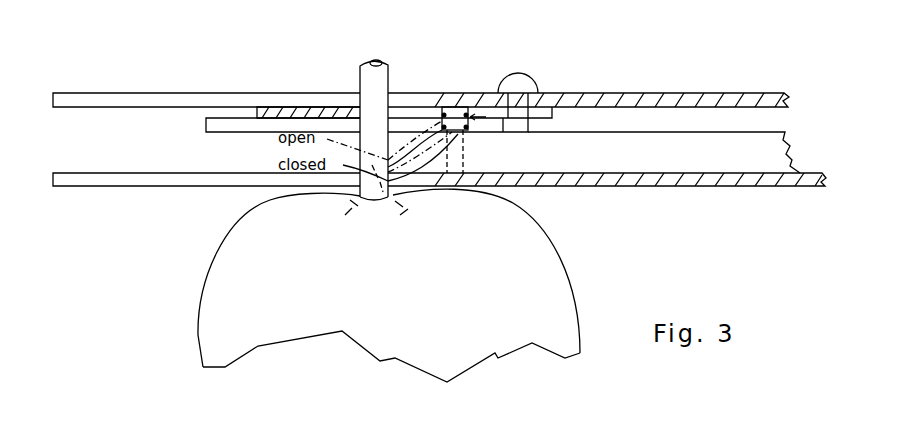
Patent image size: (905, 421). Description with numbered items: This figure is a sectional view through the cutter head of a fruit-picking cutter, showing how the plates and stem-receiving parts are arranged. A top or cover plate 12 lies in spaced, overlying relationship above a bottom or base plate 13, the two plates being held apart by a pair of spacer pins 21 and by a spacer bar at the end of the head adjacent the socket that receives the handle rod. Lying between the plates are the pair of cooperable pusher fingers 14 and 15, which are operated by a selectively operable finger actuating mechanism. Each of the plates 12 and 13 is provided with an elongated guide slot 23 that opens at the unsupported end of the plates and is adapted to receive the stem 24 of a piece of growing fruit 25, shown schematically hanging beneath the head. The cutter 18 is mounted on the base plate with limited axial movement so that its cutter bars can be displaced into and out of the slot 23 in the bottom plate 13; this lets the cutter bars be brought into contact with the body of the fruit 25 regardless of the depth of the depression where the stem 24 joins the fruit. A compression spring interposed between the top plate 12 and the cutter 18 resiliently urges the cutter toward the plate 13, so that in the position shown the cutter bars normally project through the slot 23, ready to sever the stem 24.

The top or cover plate 12 is at (787, 100).
The bottom or base plate 13 is at (792, 186).
The pusher finger 14 is at (276, 107).
The pusher finger 15 is at (221, 128).
The cutter 18 is at (634, 152).
The spacer pins 21 is at (504, 91).
The guide slot 23 is at (101, 97).
The stem 24 is at (380, 79).
The fruit 25 is at (548, 247).